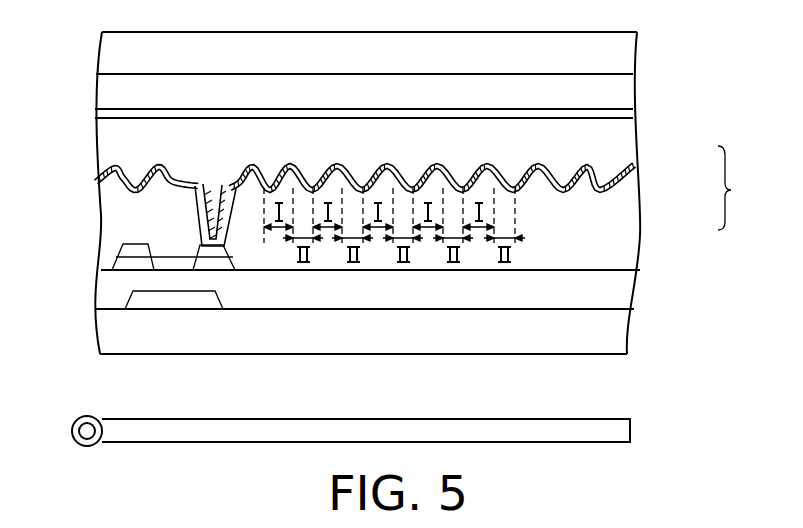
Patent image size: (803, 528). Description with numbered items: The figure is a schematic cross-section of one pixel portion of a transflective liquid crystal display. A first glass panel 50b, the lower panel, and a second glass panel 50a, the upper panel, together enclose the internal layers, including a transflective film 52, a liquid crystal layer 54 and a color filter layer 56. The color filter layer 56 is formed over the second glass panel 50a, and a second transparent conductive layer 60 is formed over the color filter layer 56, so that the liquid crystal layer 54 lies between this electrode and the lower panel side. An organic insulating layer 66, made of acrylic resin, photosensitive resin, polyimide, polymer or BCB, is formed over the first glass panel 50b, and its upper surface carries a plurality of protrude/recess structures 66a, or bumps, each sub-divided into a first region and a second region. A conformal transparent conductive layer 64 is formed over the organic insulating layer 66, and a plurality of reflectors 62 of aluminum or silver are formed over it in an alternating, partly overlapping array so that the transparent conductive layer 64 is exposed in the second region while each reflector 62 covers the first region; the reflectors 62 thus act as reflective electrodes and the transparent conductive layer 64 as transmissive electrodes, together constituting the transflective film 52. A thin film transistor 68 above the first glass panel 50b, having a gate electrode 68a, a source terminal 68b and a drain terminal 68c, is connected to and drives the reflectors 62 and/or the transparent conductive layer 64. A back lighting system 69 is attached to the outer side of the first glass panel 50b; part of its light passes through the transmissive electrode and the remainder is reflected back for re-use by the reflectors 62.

The second glass panel 50a is at (418, 69).
The first glass panel 50b is at (413, 342).
The transflective film 52 is at (742, 188).
The liquid crystal layer 54 is at (125, 153).
The color filter layer 56 is at (598, 93).
The second transparent conductive layer 60 is at (605, 116).
The reflectors 62 is at (590, 165).
The conformal transparent conductive layer 64 is at (610, 190).
The organic insulating layer 66 is at (625, 263).
The protrude/recess structures 66a is at (336, 189).
The thin film transistor 68 is at (192, 327).
The gate electrode 68a is at (174, 323).
The source terminal 68b is at (131, 251).
The drain terminal 68c is at (208, 252).
The back lighting system 69 is at (608, 430).